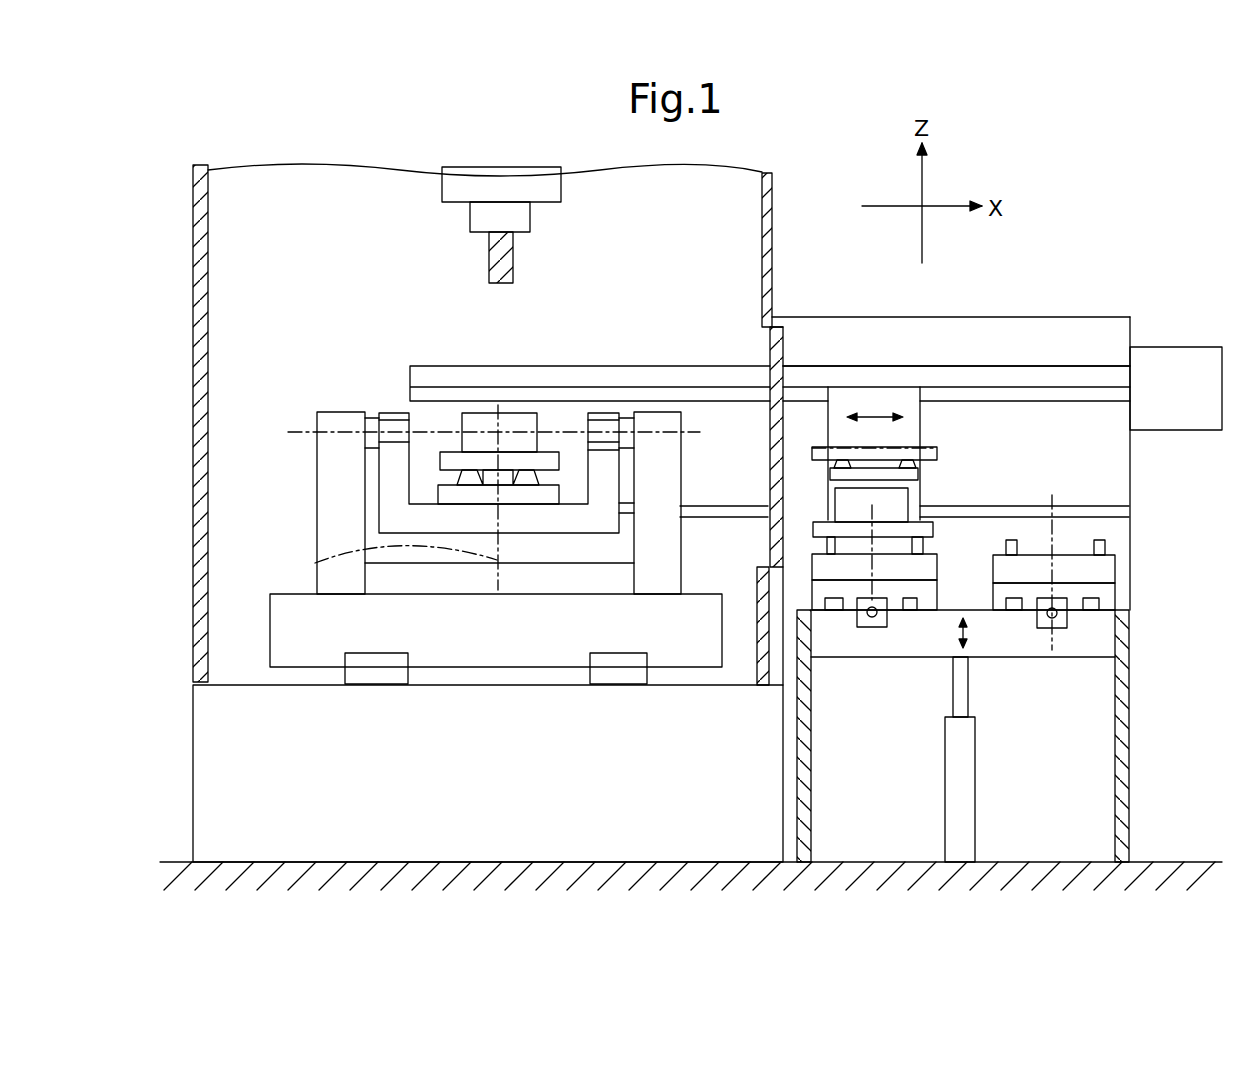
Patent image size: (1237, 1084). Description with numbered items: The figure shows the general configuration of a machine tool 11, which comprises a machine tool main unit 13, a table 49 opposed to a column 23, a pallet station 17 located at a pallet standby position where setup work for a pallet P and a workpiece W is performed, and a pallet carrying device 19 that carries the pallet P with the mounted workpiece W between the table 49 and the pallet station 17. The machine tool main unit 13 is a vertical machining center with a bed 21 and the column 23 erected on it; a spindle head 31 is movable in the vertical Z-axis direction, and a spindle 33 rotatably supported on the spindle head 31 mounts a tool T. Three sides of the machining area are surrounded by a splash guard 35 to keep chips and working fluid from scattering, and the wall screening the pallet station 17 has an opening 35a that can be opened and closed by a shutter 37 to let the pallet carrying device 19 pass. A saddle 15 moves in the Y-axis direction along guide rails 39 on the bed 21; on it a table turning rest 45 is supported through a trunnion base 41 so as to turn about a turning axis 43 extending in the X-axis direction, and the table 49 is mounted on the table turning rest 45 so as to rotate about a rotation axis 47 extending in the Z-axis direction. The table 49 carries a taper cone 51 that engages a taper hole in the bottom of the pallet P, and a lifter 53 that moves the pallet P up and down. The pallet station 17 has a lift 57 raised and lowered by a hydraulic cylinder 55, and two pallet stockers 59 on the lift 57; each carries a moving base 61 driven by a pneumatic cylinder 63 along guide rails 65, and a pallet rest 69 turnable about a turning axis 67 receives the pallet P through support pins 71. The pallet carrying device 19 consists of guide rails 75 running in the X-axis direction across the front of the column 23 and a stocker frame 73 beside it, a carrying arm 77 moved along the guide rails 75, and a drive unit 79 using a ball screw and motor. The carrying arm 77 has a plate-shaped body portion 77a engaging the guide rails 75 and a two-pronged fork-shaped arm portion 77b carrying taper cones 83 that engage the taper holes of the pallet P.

The machine tool 11 is at (784, 168).
The machine tool main unit 13 is at (194, 270).
The saddle 15 is at (292, 648).
The pallet station 17 is at (1083, 290).
The pallet carrying device 19 is at (909, 363).
The bed 21 is at (223, 807).
The column 23 is at (233, 395).
The spindle head 31 is at (552, 185).
The spindle 33 is at (530, 218).
The splash guard 35 is at (200, 562).
The opening 35a is at (780, 328).
The shutter 37 is at (785, 340).
The guide rails 39 is at (362, 668).
The trunnion base 41 is at (333, 490).
The turning axis 43 is at (303, 429).
The table turning rest 45 is at (395, 463).
The rotation axis 47 is at (405, 545).
The table 49 is at (443, 493).
The taper cone 51 is at (535, 474).
The lifter 53 is at (512, 480).
The hydraulic cylinder 55 is at (977, 820).
The lift 57 is at (1100, 638).
The pallet stockers 59 is at (940, 565).
The moving base 61 is at (817, 590).
The pneumatic cylinder 63 is at (863, 628).
The guide rails 65 is at (910, 612).
The turning axis 67 is at (843, 633).
The pallet rest 69 is at (940, 618).
The support pins 71 is at (827, 542).
The stocker frame 73 is at (1118, 333).
The guide rails 75 is at (1093, 508).
The carrying arm 77 is at (1003, 425).
The body portion 77a is at (908, 430).
The arm portion 77b is at (912, 473).
The drive unit 79 is at (1195, 347).
The taper cones 83 is at (828, 468).
The tool T is at (514, 265).
The workpiece W is at (470, 412).
The pallet P is at (450, 462).